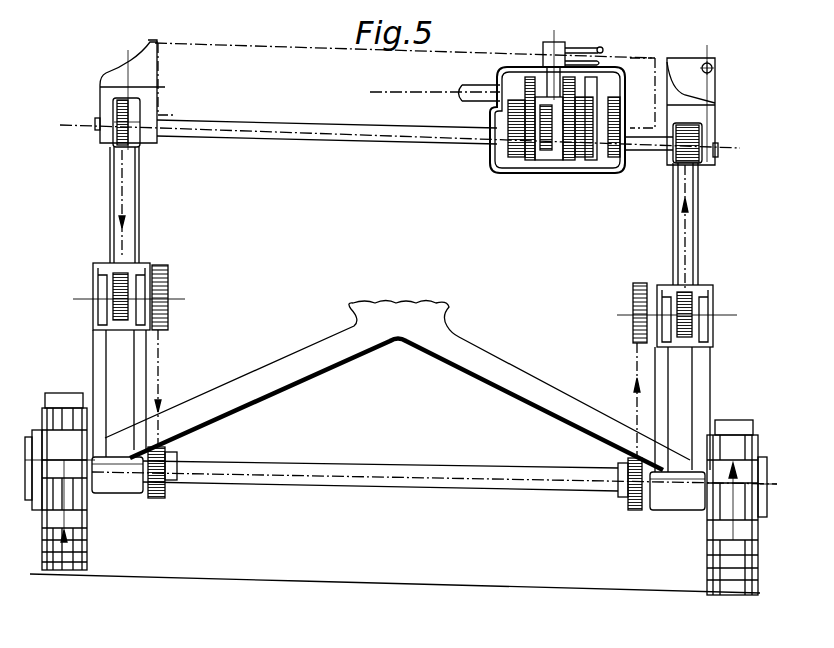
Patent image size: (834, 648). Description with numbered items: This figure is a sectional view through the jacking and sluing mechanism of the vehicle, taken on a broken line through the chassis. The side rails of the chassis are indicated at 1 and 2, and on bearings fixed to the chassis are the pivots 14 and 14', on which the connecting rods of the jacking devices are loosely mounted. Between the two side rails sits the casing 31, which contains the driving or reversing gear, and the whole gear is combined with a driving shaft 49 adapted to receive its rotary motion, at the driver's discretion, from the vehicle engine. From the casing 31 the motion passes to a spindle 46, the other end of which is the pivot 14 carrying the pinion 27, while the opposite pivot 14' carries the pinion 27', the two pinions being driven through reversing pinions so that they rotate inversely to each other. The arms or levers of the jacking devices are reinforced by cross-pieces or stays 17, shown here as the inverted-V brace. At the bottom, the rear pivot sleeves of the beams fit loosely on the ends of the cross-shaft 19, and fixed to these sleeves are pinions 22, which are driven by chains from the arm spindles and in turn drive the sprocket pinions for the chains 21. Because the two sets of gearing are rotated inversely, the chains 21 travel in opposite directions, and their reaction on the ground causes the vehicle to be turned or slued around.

The side rail 1 is at (168, 43).
The side rail 2 is at (648, 56).
The pivot spindle 14 is at (112, 95).
The pivot spindle 14' is at (698, 116).
The cross-piece or stay 17 is at (412, 327).
The cross-shaft 19 is at (482, 484).
The chain 21 is at (70, 552).
The pinion 22 is at (157, 498).
The pinion 27 is at (105, 146).
The pinion 27' is at (717, 133).
The casing 31 is at (570, 172).
The spindle 46 is at (415, 140).
The driving shaft 49 is at (472, 84).